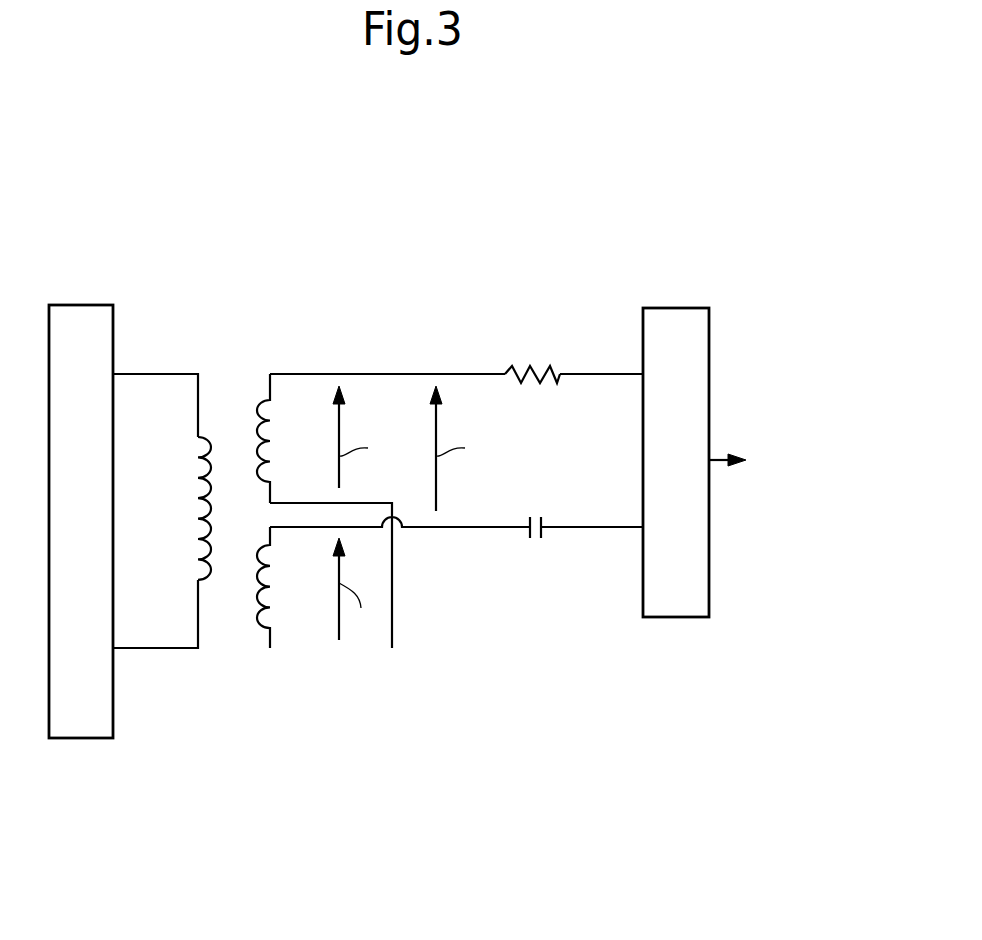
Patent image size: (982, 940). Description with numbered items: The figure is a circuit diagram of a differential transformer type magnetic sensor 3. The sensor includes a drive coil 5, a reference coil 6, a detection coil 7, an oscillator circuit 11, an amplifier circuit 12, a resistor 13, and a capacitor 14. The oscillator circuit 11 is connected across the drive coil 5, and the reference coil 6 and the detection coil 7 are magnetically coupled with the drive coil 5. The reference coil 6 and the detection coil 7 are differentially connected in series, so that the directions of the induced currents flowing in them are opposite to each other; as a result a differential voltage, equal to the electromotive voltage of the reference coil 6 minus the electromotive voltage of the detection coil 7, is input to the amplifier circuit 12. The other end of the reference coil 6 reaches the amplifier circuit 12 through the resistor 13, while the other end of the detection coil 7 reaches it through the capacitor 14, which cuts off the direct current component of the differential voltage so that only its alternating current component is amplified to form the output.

The differential transformer type magnetic sensor 3 is at (415, 258).
The drive coil 5 is at (204, 576).
The reference coil 6 is at (263, 390).
The detection coil 7 is at (262, 630).
The oscillator circuit 11 is at (77, 740).
The amplifier circuit 12 is at (710, 530).
The resistor 13 is at (550, 386).
The capacitor 14 is at (546, 518).